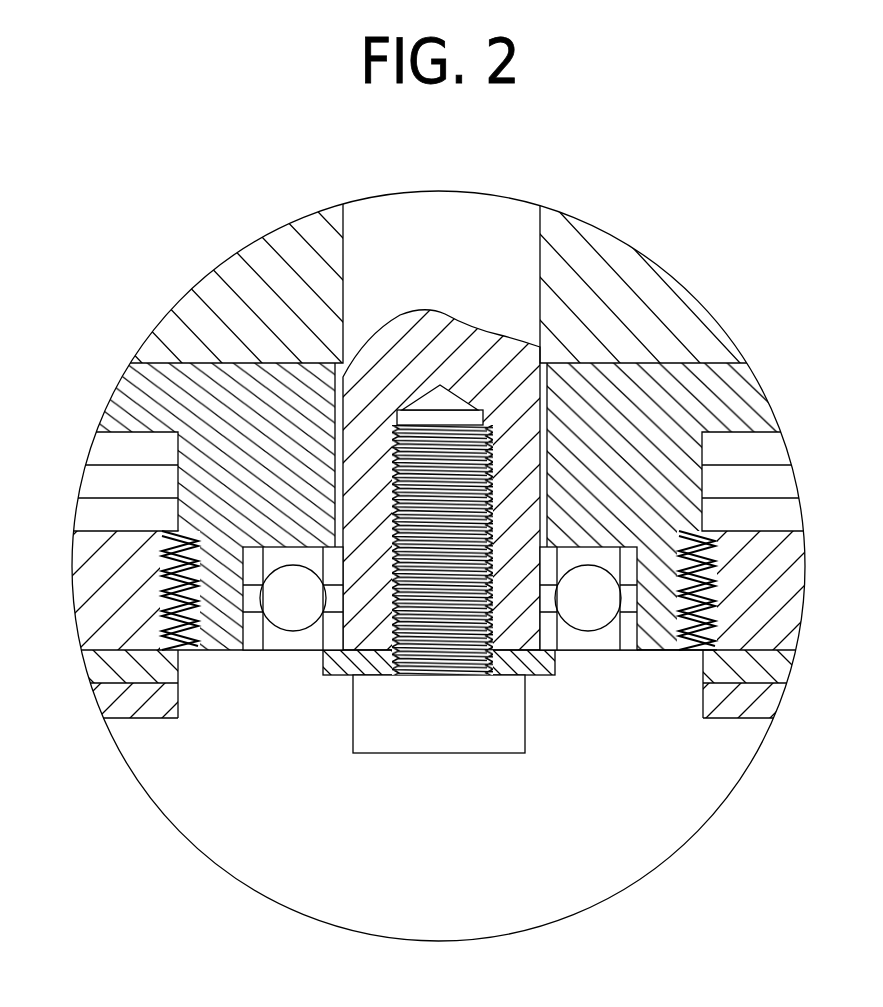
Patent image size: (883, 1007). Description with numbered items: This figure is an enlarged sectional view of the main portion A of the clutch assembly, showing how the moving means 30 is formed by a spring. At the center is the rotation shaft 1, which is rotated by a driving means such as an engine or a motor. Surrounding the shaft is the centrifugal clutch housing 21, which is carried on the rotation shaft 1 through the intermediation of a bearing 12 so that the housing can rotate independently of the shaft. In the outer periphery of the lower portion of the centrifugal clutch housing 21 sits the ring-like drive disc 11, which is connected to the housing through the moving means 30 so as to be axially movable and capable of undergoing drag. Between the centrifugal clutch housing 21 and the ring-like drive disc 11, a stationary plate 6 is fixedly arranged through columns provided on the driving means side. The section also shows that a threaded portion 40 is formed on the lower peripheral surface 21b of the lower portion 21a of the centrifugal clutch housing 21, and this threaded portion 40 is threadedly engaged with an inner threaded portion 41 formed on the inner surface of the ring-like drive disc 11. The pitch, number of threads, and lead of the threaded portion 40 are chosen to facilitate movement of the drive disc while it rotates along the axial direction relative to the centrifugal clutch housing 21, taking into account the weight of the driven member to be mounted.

The rotation shaft 1 is at (490, 218).
The main portion A is at (652, 262).
The centrifugal clutch housing 21 is at (745, 395).
The stationary plate 6 is at (782, 488).
The ring-like drive disc 11 is at (795, 545).
The bearing 12 is at (294, 643).
The moving means 30 is at (713, 663).
The threaded portion 40 is at (717, 560).
The inner threaded portion 41 is at (715, 615).
The lower portion 21a is at (688, 650).
The lower peripheral surface 21b is at (658, 623).